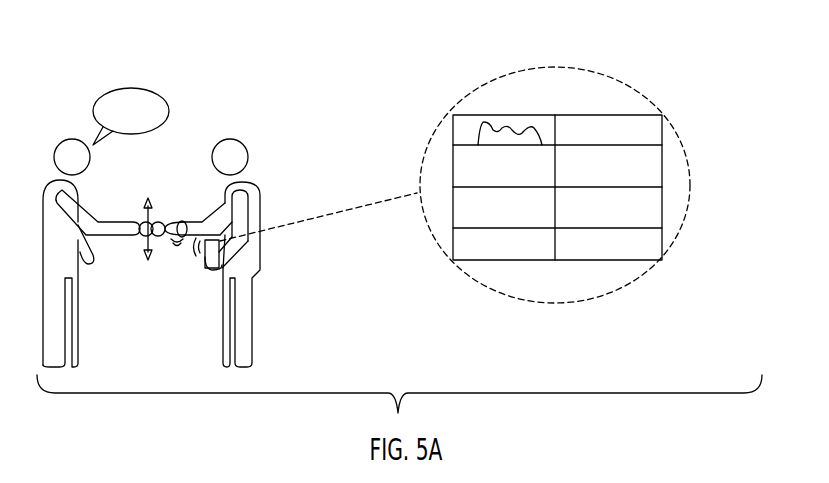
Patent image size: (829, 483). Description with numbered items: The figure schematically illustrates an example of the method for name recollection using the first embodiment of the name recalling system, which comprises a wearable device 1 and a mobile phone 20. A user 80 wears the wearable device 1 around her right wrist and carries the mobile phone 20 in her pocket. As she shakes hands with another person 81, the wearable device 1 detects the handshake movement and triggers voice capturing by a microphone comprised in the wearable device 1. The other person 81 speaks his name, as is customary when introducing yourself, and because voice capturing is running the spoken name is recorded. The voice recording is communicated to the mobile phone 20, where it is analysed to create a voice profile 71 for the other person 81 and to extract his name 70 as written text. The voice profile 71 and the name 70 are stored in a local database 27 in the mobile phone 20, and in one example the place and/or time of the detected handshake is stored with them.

The other person 81 is at (25, 141).
The user 80 is at (255, 143).
The wearable device 1 is at (183, 221).
The mobile phone 20 is at (198, 295).
The voice profile 71 is at (508, 128).
The name 70 is at (637, 128).
The local database 27 is at (614, 178).